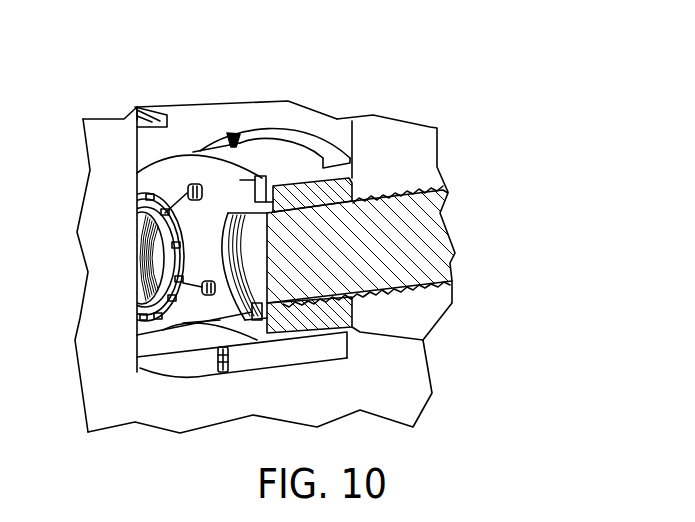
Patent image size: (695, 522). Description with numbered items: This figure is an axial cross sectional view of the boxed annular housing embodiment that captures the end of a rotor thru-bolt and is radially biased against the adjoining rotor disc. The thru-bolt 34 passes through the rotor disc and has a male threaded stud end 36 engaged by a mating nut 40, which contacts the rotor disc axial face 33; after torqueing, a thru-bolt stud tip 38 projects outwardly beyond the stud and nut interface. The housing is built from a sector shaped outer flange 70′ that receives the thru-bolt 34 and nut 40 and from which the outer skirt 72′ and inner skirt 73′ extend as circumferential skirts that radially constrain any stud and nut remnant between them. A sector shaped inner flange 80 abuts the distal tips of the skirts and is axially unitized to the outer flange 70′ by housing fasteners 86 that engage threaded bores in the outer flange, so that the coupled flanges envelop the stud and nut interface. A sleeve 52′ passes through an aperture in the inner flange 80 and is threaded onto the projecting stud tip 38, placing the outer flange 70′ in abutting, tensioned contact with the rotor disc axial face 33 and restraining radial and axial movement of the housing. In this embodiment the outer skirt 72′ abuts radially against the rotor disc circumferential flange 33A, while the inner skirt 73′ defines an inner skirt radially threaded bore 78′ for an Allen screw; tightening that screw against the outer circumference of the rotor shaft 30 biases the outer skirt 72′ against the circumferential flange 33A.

The rotor shaft 30 is at (167, 370).
The rotor disc axial face 33 is at (337, 119).
The rotor disc circumferential flange 33A is at (313, 137).
The thru-bolt 34 is at (442, 208).
The male threaded stud end 36 is at (383, 253).
The thru-bolt stud tip 38 is at (240, 180).
The nut 40 is at (392, 325).
The sleeve 52′ is at (167, 234).
The outer flange 70′ is at (68, 308).
The outer skirt 72′ is at (268, 160).
The inner skirt 73′ is at (310, 350).
The inner skirt radially threaded bore 78′ is at (213, 375).
The inner flange 80 is at (157, 173).
The housing fastener 86 is at (150, 201).